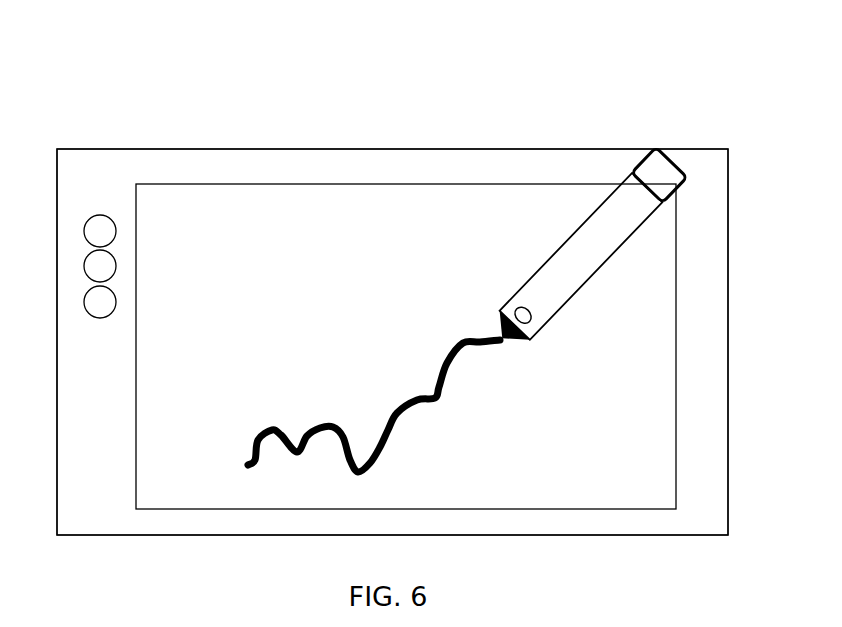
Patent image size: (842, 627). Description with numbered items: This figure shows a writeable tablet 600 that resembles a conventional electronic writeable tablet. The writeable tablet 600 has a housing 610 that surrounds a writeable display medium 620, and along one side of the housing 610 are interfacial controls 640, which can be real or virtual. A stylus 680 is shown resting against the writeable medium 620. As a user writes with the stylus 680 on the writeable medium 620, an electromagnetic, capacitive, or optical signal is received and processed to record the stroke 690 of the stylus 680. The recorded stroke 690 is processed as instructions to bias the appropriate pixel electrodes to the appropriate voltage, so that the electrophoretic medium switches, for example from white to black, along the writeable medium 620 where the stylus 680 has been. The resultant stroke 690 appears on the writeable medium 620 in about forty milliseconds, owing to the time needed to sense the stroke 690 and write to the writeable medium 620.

The writeable tablet 600 is at (506, 117).
The housing 610 is at (101, 178).
The writeable display medium 620 is at (303, 217).
The interfacial controls 640 is at (103, 302).
The stylus 680 is at (575, 257).
The stroke 690 is at (460, 353).